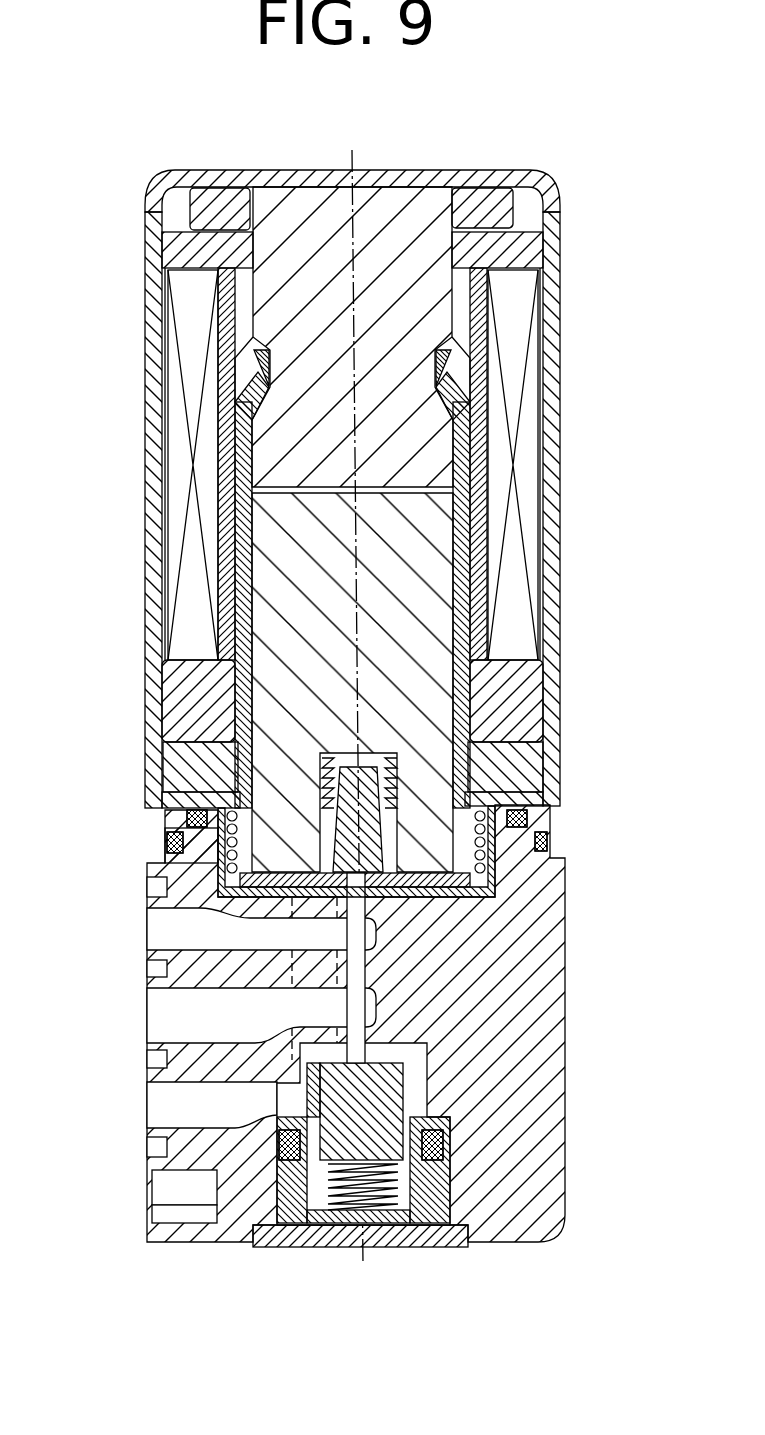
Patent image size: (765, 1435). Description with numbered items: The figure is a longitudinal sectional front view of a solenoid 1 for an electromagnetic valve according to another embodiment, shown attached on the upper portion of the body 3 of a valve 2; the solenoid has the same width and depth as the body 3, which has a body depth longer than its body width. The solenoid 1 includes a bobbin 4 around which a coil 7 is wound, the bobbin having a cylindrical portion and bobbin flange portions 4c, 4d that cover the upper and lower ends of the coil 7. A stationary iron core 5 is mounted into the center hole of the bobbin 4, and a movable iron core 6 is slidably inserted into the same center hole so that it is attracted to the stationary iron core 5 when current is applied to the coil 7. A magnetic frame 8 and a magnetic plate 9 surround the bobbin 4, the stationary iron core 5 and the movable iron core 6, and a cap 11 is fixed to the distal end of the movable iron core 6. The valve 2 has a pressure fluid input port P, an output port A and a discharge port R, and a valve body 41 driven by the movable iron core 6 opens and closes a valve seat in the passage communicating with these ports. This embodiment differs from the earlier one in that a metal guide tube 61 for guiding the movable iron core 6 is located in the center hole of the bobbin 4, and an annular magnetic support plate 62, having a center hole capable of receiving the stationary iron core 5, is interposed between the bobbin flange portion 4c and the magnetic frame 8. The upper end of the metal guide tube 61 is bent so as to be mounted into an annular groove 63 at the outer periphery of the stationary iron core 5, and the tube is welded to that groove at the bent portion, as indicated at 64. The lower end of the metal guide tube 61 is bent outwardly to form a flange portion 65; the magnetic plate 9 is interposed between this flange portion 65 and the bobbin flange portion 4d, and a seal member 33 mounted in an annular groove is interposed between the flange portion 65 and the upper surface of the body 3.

The solenoid for electromagnetic valve 1 is at (355, 490).
The valve 2 is at (373, 1021).
The body 3 is at (555, 995).
The bobbin 4 is at (530, 225).
The bobbin flange portion 4c is at (523, 247).
The bobbin flange portion 4d is at (524, 702).
The stationary iron core 5 is at (388, 205).
The movable iron core 6 is at (290, 558).
The coil 7 is at (524, 468).
The magnetic frame 8 is at (552, 320).
The magnetic plate 9 is at (528, 770).
The cap 11 is at (408, 886).
The seal member 33 is at (540, 838).
The valve body 41 is at (178, 858).
The metal guide tube 61 is at (480, 575).
The annular magnetic support plate 62 is at (222, 205).
The annular groove 63 is at (245, 368).
The weld 64 is at (470, 380).
The flange portion 65 is at (553, 808).
The pressure fluid input port P is at (160, 928).
The discharge port R is at (160, 1022).
The output port A is at (160, 1100).